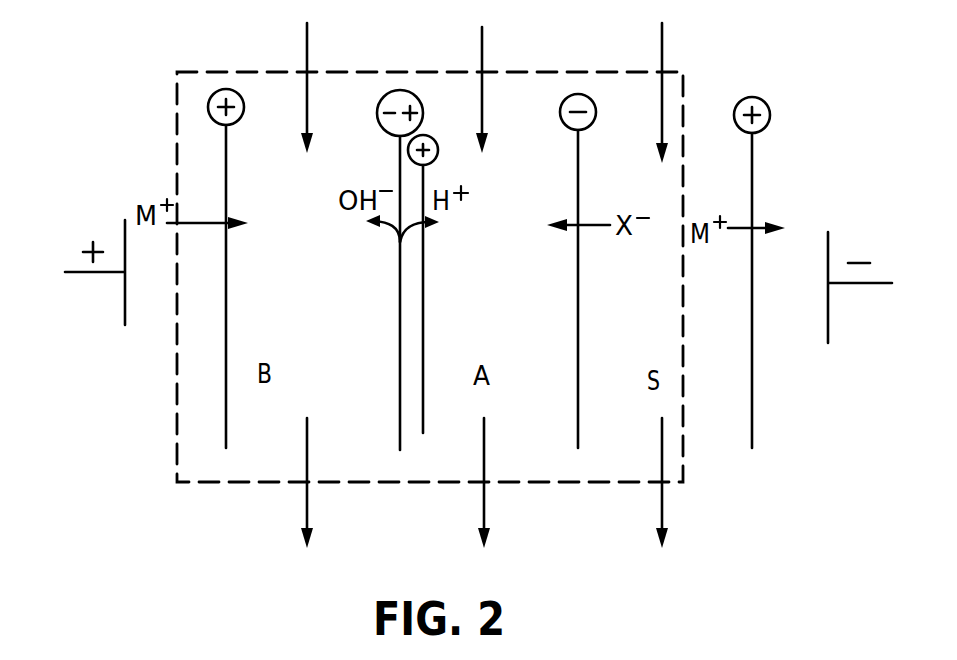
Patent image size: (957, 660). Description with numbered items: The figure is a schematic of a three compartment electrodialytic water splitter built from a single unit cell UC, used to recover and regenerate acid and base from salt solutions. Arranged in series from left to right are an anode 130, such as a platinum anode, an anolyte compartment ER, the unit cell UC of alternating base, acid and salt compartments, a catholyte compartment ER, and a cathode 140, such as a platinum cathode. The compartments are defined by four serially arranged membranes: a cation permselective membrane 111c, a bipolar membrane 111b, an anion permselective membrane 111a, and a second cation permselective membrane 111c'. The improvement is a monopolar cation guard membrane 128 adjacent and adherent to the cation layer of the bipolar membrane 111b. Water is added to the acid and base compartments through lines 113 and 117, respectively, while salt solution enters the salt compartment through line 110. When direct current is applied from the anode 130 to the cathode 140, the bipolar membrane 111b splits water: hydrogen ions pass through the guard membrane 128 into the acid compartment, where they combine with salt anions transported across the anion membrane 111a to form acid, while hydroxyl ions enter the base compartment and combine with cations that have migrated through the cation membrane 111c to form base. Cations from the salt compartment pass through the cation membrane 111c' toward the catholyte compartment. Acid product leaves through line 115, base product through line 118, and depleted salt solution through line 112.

The unit cell UC is at (680, 72).
The line 110 is at (662, 46).
The anion permselective membrane 111a is at (578, 385).
The bipolar membrane 111b is at (400, 377).
The cation permselective membrane 111c is at (211, 268).
The cation permselective membrane 111c' is at (734, 272).
The line 112 is at (662, 517).
The line 113 is at (482, 47).
The line 115 is at (484, 518).
The line 117 is at (307, 47).
The line 118 is at (307, 518).
The monopolar cation guard membrane 128 is at (424, 328).
The anode 130 is at (125, 238).
The cathode 140 is at (828, 262).
The electrode rinse compartment ER is at (148, 322).